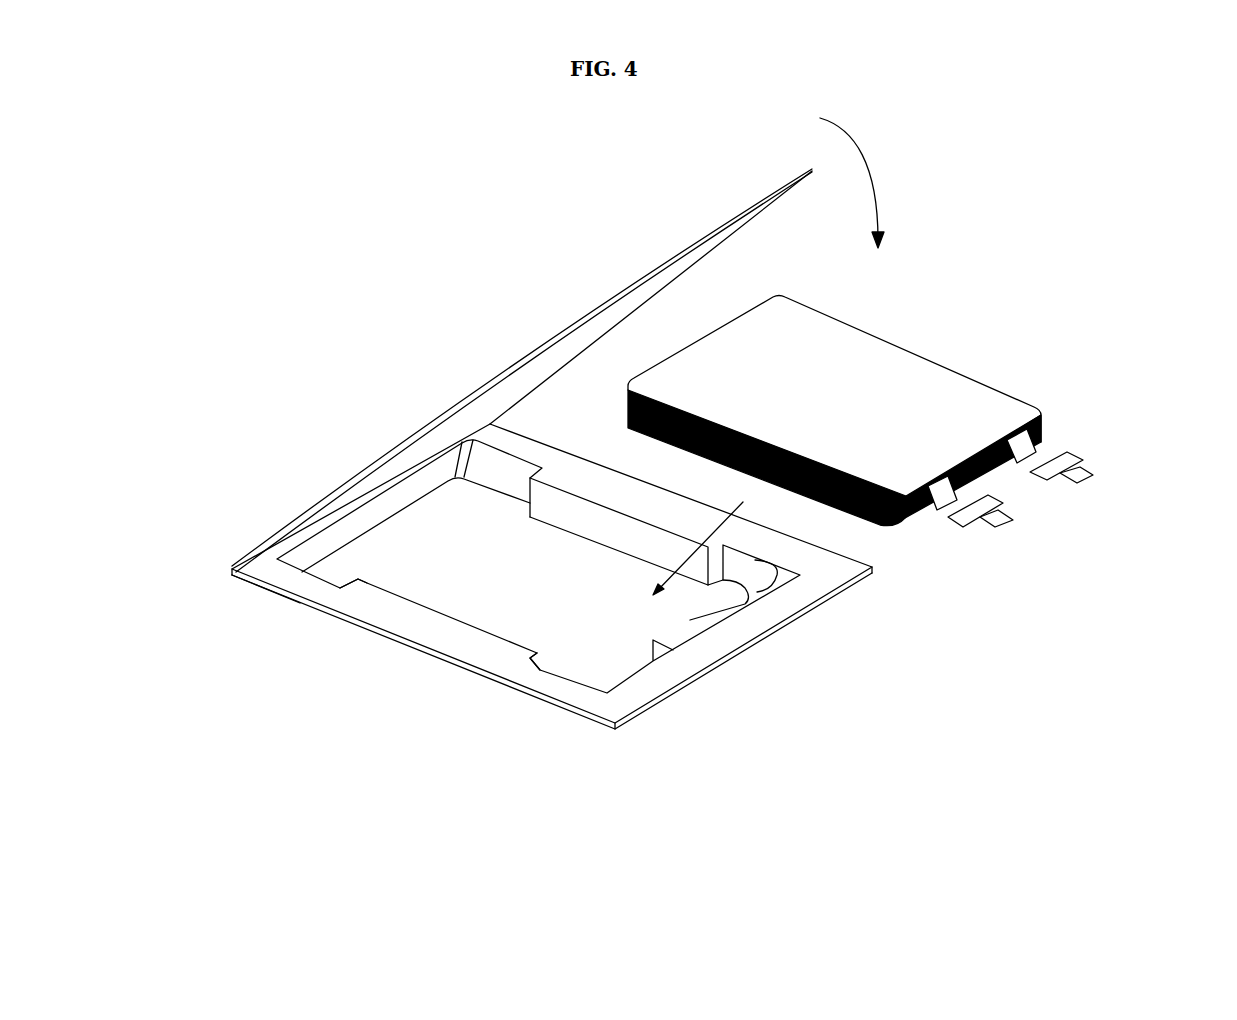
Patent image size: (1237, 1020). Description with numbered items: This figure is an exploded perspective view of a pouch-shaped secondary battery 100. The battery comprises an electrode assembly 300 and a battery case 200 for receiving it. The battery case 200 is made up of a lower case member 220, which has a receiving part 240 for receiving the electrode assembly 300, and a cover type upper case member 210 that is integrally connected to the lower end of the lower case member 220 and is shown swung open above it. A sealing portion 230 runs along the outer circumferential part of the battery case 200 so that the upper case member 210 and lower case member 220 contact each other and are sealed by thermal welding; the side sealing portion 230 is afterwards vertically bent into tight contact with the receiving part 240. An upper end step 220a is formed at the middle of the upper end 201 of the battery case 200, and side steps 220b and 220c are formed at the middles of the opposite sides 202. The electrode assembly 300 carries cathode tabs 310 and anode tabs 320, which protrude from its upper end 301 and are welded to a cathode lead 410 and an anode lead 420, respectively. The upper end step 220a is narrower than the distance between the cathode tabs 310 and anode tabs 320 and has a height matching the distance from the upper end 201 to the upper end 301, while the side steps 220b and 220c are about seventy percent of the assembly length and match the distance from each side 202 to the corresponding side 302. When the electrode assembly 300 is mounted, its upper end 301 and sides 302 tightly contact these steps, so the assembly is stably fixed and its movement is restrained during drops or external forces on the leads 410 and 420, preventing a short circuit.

The pouch-shaped secondary battery 100 is at (291, 181).
The battery case 200 is at (337, 405).
The upper end of the battery case 201 is at (648, 668).
The opposite sides of the battery case 202 is at (282, 598).
The upper case member 210 is at (588, 304).
The lower case member 220 is at (480, 673).
The upper end step 220a is at (740, 596).
The side step 220b is at (430, 620).
The side step 220c is at (587, 519).
The sealing portion 230 is at (513, 441).
The receiving part 240 is at (597, 658).
The electrode assembly 300 is at (935, 357).
The upper end of the electrode assembly 301 is at (1007, 442).
The side of the electrode assembly 302 is at (737, 438).
The cathode tabs 310 is at (938, 507).
The anode tabs 320 is at (1027, 438).
The cathode lead 410 is at (995, 517).
The anode lead 420 is at (1087, 470).